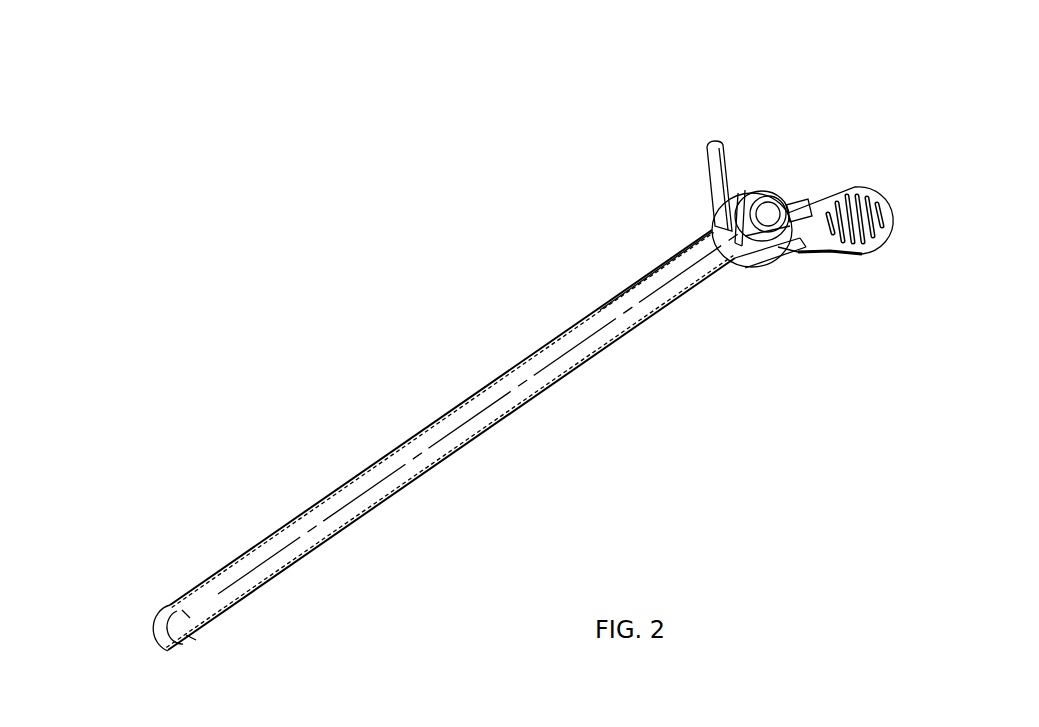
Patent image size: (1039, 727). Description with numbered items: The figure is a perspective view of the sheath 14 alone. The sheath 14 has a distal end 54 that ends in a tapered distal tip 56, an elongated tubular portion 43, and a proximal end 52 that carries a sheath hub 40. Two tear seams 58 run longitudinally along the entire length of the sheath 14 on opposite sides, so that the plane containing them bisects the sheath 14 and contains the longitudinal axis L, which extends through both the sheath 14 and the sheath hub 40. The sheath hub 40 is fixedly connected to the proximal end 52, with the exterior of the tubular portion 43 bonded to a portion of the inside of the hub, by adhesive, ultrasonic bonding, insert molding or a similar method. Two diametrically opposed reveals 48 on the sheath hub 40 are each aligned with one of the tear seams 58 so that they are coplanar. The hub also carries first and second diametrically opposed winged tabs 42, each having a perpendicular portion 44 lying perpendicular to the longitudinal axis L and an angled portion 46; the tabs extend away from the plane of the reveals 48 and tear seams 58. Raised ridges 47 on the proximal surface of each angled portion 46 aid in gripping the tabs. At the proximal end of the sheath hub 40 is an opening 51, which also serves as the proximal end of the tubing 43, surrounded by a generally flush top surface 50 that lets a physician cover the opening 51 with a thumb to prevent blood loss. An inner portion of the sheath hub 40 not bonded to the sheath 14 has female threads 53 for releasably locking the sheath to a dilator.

The sheath 14 is at (422, 340).
The sheath hub 40 is at (685, 207).
The winged tabs 42 is at (742, 128).
The elongated tubular portion 43 is at (526, 406).
The perpendicular portion 44 is at (745, 180).
The angled portion 46 is at (705, 165).
The raised ridges 47 is at (867, 252).
The reveals 48 is at (755, 268).
The top surface 50 is at (797, 200).
The opening 51 is at (808, 203).
The proximal end 52 is at (643, 263).
The female threads 53 is at (782, 190).
The distal end 54 is at (208, 557).
The tapered distal tip 56 is at (180, 648).
The tear seams 58 is at (519, 363).
The longitudinal axis L is at (596, 346).